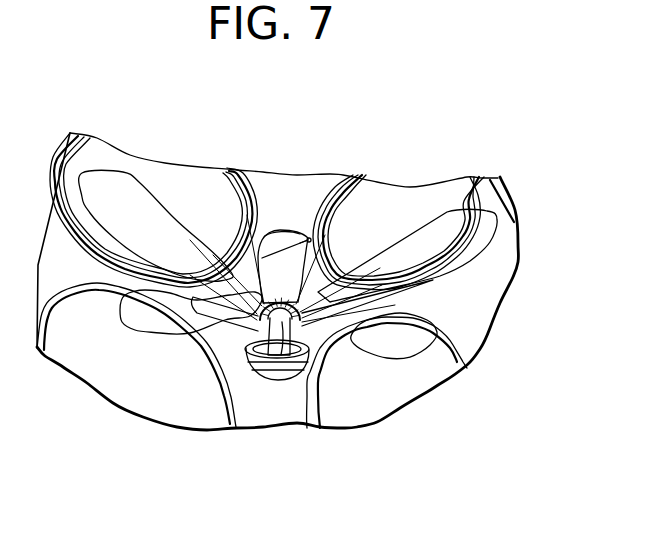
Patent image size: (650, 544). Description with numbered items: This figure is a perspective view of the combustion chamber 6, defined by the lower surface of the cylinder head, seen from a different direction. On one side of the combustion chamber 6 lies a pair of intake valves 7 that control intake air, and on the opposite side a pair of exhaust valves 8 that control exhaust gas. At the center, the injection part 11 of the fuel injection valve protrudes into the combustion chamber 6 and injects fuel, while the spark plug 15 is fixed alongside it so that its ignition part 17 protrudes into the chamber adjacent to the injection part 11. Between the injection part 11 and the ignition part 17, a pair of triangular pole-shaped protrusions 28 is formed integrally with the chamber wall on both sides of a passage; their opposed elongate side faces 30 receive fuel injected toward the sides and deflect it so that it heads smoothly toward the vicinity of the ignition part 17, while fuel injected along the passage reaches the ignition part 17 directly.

The combustion chamber 6 is at (276, 212).
The intake valves 7 is at (168, 175).
The exhaust valves 8 is at (397, 200).
The injection part 11 is at (309, 240).
The spark plug 15 is at (267, 380).
The ignition part 17 is at (290, 362).
The protrusions 28 is at (203, 350).
The side faces 30 is at (245, 362).